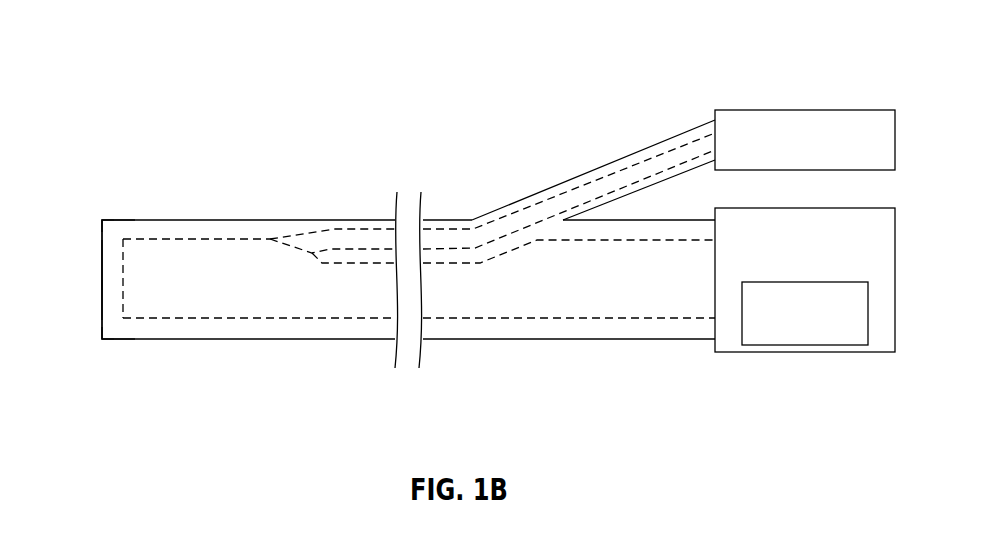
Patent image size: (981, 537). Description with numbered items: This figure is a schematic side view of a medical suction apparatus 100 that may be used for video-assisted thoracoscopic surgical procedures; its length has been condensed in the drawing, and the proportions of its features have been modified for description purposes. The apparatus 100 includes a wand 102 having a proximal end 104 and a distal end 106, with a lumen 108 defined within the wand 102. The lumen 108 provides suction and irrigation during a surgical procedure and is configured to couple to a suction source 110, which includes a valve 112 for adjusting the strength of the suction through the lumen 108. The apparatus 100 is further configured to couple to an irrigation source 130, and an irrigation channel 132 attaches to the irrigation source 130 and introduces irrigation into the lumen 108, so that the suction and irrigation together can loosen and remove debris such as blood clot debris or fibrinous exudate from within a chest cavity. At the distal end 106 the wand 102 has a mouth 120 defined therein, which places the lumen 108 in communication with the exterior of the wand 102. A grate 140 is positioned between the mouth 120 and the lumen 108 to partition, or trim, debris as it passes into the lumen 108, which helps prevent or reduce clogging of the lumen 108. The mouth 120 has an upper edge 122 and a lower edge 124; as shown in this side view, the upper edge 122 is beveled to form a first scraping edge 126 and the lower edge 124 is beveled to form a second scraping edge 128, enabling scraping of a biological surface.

The medical suction apparatus 100 is at (178, 45).
The wand 102 is at (213, 340).
The proximal end 104 is at (717, 306).
The distal end 106 is at (101, 296).
The lumen 108 is at (218, 262).
The suction source 110 is at (867, 208).
The valve 112 is at (868, 329).
The mouth 120 is at (101, 269).
The upper edge 122 is at (117, 236).
The lower edge 124 is at (117, 323).
The first scraping edge 126 is at (101, 219).
The second scraping edge 128 is at (101, 341).
The irrigation source 130 is at (868, 110).
The irrigation channel 132 is at (619, 184).
The grate 140 is at (113, 283).